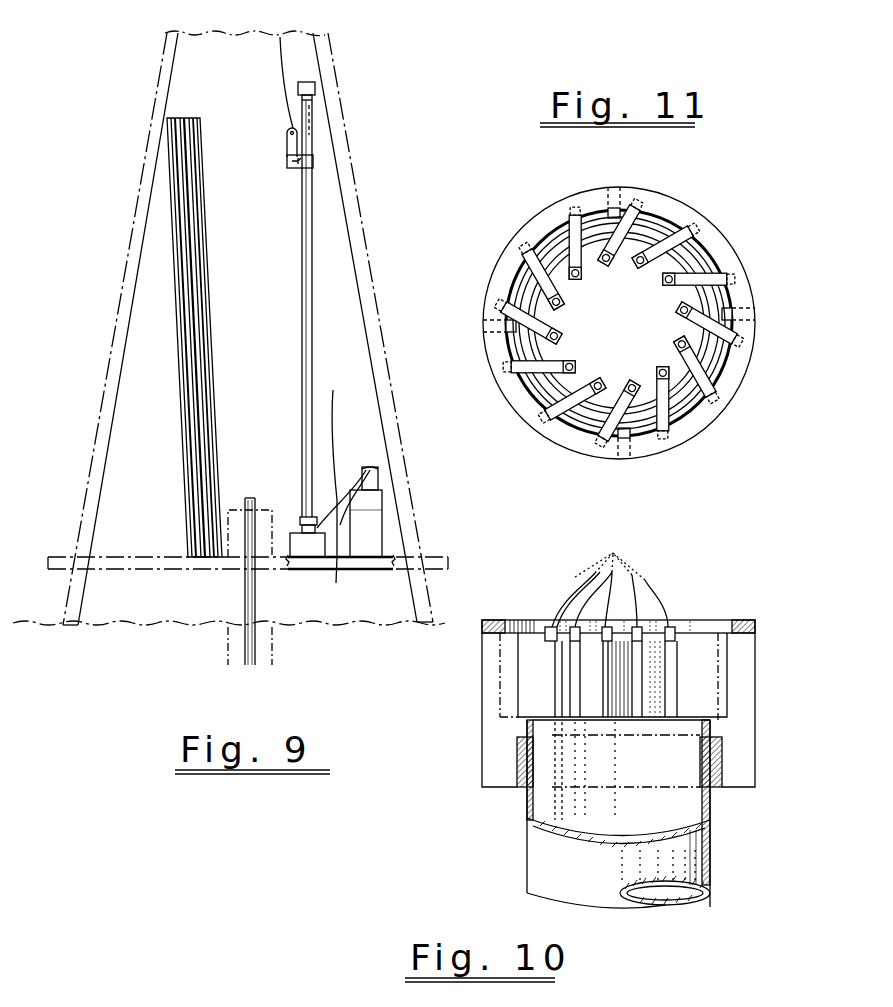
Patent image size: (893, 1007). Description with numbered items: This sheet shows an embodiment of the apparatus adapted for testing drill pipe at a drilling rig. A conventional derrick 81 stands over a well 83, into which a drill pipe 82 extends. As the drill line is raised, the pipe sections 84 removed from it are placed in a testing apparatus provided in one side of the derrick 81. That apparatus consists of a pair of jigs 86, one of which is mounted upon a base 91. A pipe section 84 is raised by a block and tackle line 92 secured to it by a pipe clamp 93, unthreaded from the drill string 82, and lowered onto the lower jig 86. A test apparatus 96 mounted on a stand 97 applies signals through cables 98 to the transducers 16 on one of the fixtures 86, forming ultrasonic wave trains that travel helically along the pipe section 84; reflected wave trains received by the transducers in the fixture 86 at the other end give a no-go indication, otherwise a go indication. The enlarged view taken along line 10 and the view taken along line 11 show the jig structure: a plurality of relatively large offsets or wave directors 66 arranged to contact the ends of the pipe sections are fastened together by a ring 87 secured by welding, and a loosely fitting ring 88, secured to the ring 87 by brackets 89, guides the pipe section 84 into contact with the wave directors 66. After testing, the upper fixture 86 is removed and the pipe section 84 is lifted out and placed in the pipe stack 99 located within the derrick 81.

In FIG. 9, the section line 10— 10 is at (307, 82).
In FIG. 10, the section line 11— 11 is at (547, 603).
In FIG. 11, the transducers 16 is at (664, 282).
In FIG. 10, the transducers 16 is at (640, 630).
In FIG. 11, the wave directors 66 is at (567, 400).
In FIG. 10, the wave directors 66 is at (533, 692).
In FIG. 9, the derrick 81 is at (370, 263).
In FIG. 9, the drill pipe 82 is at (245, 587).
In FIG. 9, the well 83 is at (228, 658).
In FIG. 9, the pipe sections 84 is at (305, 407).
In FIG. 9, the jigs 86 is at (297, 90).
In FIG. 10, the jigs 86 is at (480, 752).
In FIG. 11, the ring 87 is at (693, 427).
In FIG. 10, the ring 87 is at (738, 630).
In FIG. 10, the loosely fitting ring 88 is at (522, 787).
In FIG. 11, the brackets 89 is at (612, 460).
In FIG. 10, the brackets 89 is at (495, 765).
In FIG. 9, the base 91 is at (307, 547).
In FIG. 9, the line 92 is at (280, 72).
In FIG. 9, the pipe clamp 93 is at (292, 165).
In FIG. 9, the test apparatus 96 is at (372, 465).
In FIG. 9, the stand 97 is at (377, 518).
In FIG. 9, the cables 98 is at (333, 390).
In FIG. 9, the pipe stack 99 is at (217, 305).